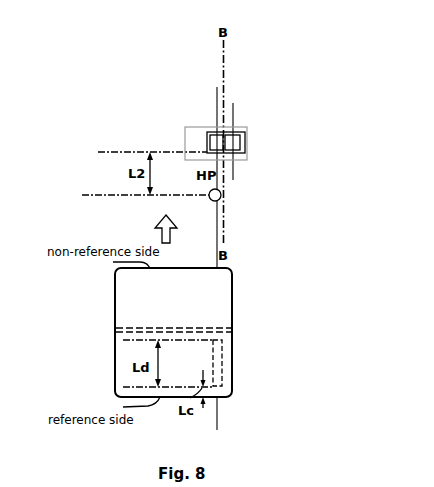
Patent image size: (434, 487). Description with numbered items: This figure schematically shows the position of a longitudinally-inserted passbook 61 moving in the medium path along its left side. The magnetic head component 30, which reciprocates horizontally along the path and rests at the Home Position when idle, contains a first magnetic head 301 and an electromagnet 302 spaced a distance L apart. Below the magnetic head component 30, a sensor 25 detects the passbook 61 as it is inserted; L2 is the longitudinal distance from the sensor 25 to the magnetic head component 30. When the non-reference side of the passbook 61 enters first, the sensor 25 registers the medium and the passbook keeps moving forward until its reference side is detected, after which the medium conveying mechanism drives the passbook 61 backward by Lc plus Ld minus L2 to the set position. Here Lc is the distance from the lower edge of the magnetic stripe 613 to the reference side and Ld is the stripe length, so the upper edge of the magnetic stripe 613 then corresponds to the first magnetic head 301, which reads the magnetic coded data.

The magnetic head component 30 is at (245, 143).
The first magnetic head 301 is at (215, 133).
The electromagnet 302 is at (249, 135).
The sensor 25 is at (222, 195).
The passbook 61 is at (115, 327).
The magnetic stripe 613 is at (222, 371).